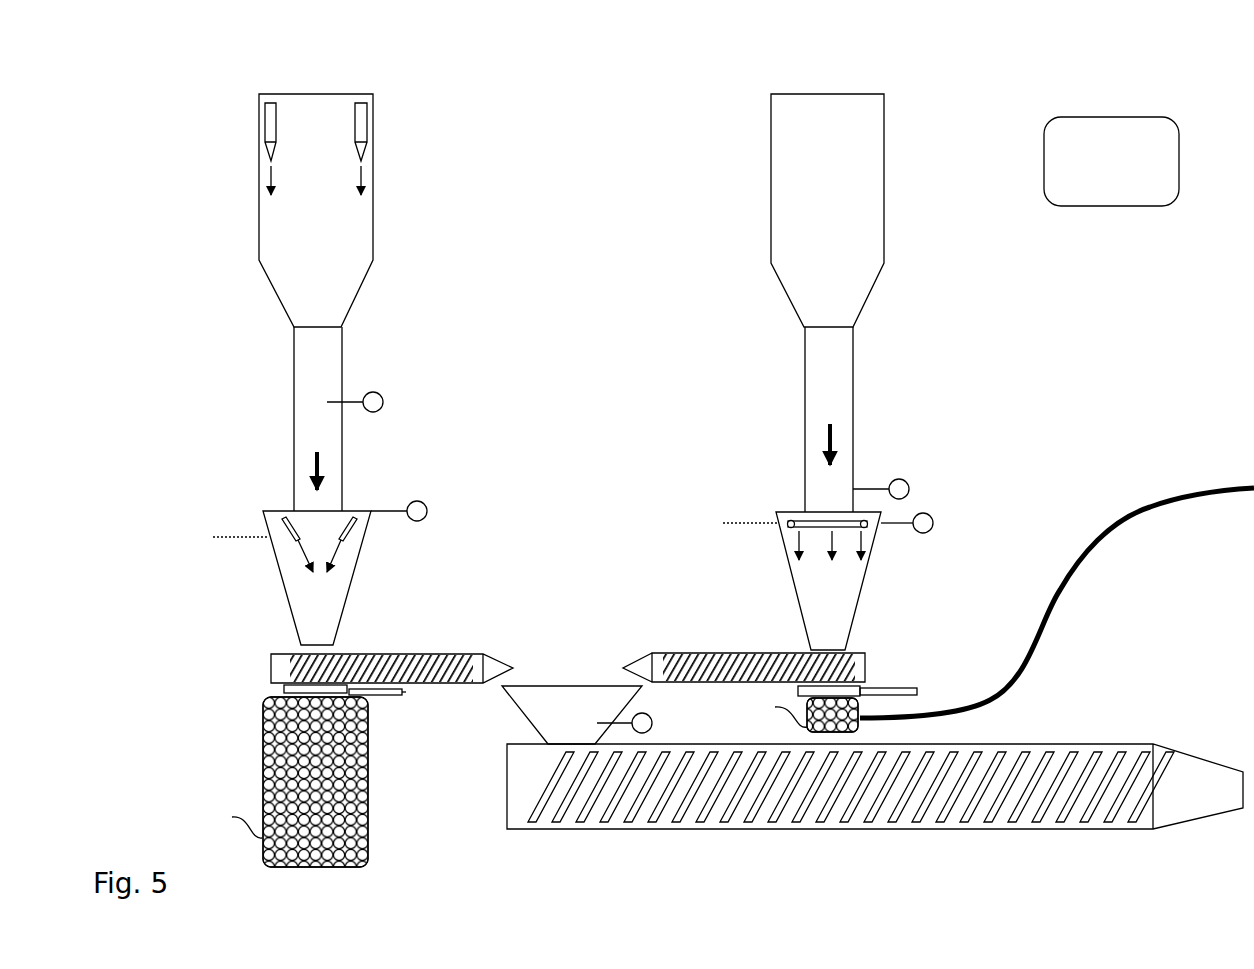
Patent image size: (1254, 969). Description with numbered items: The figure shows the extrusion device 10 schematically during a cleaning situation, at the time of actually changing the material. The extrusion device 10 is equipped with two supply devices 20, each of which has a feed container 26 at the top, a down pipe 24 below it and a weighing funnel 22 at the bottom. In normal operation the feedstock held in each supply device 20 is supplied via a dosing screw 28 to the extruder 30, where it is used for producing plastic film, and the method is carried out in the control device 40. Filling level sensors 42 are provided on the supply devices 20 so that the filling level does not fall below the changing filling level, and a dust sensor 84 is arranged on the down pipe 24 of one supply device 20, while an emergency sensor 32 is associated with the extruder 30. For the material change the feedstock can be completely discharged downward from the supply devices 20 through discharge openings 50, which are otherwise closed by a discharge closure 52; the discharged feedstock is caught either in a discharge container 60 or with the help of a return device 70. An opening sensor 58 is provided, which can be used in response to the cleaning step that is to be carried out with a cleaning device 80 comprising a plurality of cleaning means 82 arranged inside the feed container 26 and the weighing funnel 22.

The extrusion device 10 is at (152, 132).
The supply device 20 is at (410, 213).
The weighing funnel 22 is at (340, 628).
The down pipe 24 is at (343, 368).
The feed container 26 is at (373, 115).
The dosing screw 28 is at (423, 653).
The extruder 30 is at (1063, 745).
The emergency sensor 32 is at (651, 722).
The control device 40 is at (1102, 117).
The filling level sensor 42 is at (420, 502).
The discharge opening 50 is at (268, 688).
The discharge closure 52 is at (372, 695).
The opening sensor 58 is at (405, 692).
The discharge container 60 is at (262, 758).
The return device 70 is at (1148, 510).
The cleaning device 80 is at (268, 237).
The cleaning means 82 is at (356, 110).
The dust sensor 84 is at (387, 402).